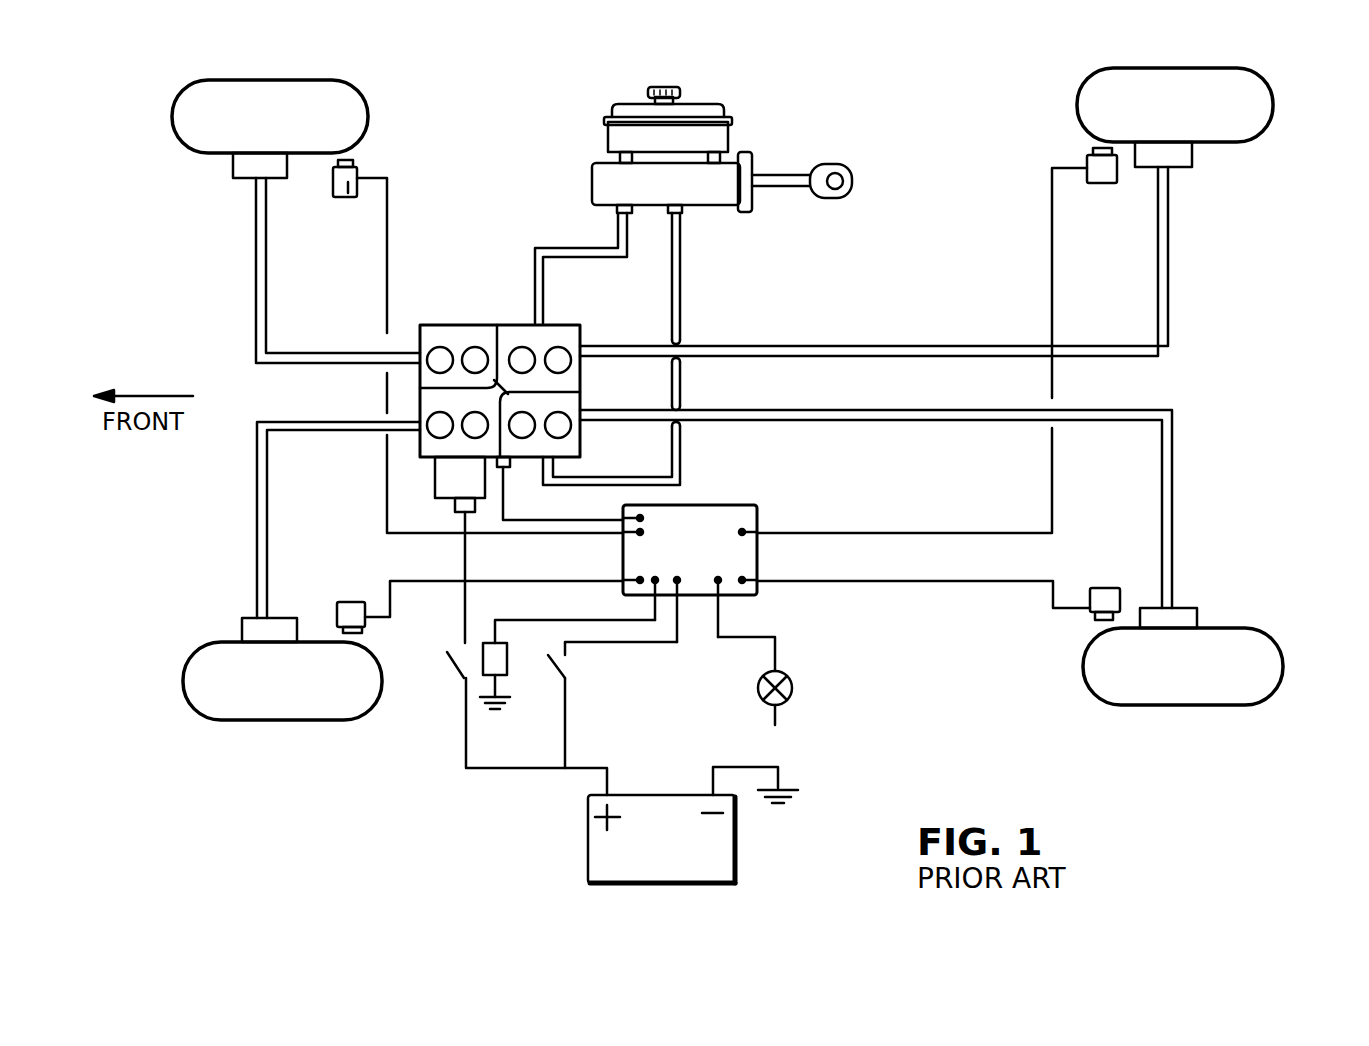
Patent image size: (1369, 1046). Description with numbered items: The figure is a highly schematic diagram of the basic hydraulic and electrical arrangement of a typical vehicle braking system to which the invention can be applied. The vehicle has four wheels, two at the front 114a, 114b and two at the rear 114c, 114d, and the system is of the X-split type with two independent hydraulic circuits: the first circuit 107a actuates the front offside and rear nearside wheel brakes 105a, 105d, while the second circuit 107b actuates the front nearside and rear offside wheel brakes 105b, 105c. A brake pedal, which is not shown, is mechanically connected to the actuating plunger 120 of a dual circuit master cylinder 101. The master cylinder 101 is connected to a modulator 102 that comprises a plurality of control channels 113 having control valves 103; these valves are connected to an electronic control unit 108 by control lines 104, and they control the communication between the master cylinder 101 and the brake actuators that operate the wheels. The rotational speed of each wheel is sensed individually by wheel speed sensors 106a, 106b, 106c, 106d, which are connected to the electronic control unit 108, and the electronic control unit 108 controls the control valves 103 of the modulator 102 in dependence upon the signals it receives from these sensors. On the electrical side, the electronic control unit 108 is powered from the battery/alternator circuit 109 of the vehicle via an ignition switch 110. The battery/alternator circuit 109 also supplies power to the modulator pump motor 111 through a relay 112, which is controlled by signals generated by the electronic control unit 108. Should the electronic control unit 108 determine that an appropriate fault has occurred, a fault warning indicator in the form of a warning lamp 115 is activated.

The dual circuit master cylinder 101 is at (593, 177).
The modulator 102 is at (522, 370).
The control valves 103 is at (560, 357).
The control lines 104 is at (517, 520).
The front offside wheel brake 105a is at (244, 167).
The front nearside wheel brake 105b is at (253, 632).
The rear offside wheel brake 105c is at (1175, 160).
The rear nearside wheel brake 105d is at (1185, 618).
The wheel speed sensor 106a is at (348, 198).
The wheel speed sensor 106b is at (352, 605).
The wheel speed sensor 106c is at (1105, 185).
The wheel speed sensor 106d is at (1108, 588).
The first hydraulic circuit 107a is at (1178, 495).
The second hydraulic circuit 107b is at (890, 346).
The electronic control unit 108 is at (757, 508).
The battery/alternator circuit 109 is at (735, 848).
The ignition switch 110 is at (565, 674).
The modulator pump motor 111 is at (452, 483).
The relay 112 is at (508, 664).
The control channels 113 is at (428, 400).
The front wheel 114a is at (183, 128).
The front wheel 114b is at (202, 698).
The rear wheel 114c is at (1265, 105).
The rear wheel 114d is at (1262, 683).
The fault warning indicator (warning lamp) 115 is at (758, 690).
The actuating plunger 120 is at (795, 180).